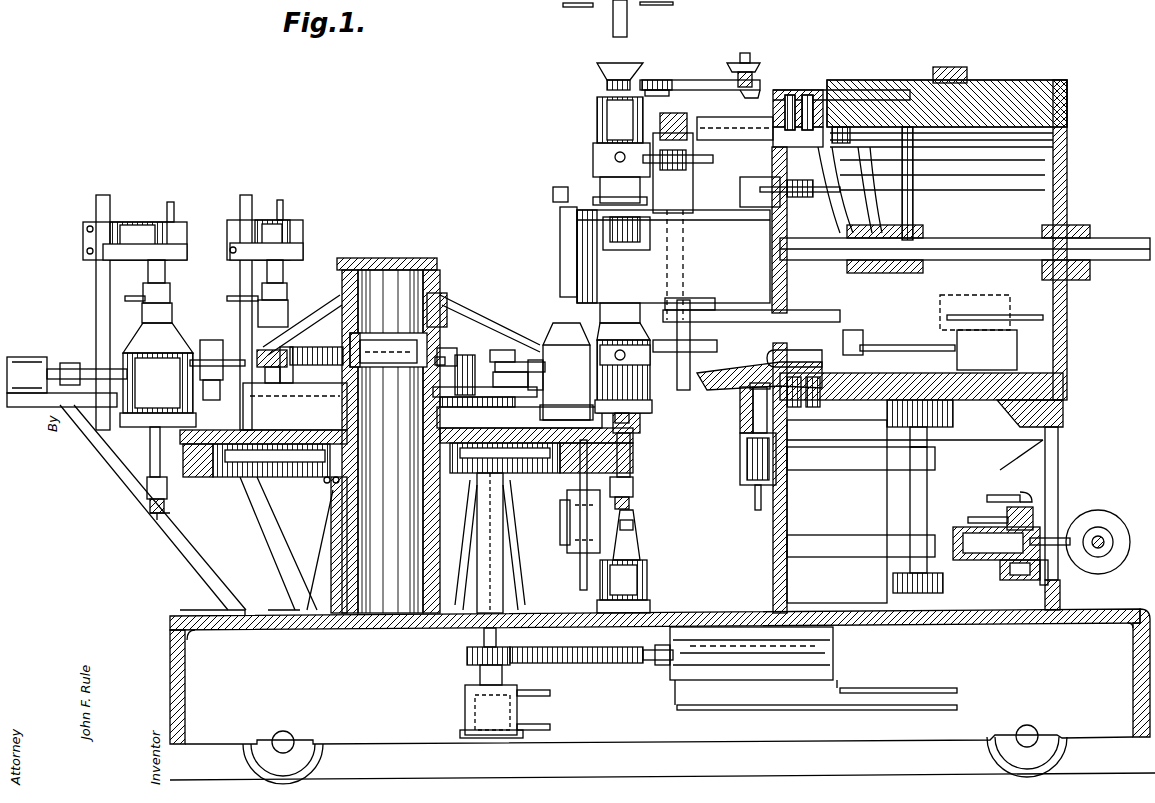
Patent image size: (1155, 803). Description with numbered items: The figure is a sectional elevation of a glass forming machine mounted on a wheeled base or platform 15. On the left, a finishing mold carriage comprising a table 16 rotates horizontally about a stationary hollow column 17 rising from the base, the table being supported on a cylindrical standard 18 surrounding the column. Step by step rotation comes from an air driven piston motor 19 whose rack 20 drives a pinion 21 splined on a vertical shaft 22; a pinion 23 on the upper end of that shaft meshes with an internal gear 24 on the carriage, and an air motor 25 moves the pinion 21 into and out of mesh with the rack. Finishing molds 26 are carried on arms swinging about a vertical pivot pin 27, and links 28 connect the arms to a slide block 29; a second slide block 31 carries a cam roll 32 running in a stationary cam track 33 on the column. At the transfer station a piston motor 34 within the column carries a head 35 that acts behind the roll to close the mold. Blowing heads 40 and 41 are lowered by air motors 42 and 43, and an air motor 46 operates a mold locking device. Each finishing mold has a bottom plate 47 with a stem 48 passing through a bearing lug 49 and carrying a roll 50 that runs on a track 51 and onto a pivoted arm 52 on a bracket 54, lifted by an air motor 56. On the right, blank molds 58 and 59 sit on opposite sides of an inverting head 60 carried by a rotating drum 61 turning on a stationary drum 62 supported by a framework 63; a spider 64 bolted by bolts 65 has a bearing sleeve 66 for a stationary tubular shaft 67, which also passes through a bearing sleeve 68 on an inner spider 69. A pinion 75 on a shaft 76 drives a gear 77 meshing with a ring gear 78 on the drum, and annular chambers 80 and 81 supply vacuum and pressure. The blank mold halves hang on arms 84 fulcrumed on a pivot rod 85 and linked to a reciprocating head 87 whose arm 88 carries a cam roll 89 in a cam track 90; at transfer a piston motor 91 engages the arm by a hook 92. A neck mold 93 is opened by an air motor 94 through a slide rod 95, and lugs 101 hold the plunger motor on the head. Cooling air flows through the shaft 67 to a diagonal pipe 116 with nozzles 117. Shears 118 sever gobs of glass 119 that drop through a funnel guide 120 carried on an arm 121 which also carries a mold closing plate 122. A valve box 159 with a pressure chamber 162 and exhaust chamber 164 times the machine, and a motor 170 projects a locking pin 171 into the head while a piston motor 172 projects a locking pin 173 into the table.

The wheeled base or platform 15 is at (710, 615).
The table 16 is at (310, 425).
The stationary hollow shaft or column 17 is at (325, 484).
The cylindrical standard 18 is at (323, 525).
The air driven piston motor 19 is at (775, 675).
The rack 20 is at (592, 665).
The pinion 21 is at (467, 660).
The vertical shaft 22 is at (484, 640).
The pinion 23 is at (500, 470).
The internal gear 24 is at (240, 480).
The air motor 25 is at (465, 708).
The finishing molds 26 is at (170, 338).
The vertical pivot pin 27 is at (215, 340).
The links 28 is at (530, 362).
The slide block 29 is at (505, 395).
The second slide block 31 is at (465, 400).
The cam roll 32 is at (280, 370).
The stationary cam groove or track 33 is at (265, 352).
The piston motor 34 is at (405, 372).
The head 35 is at (445, 345).
The blowing head 40 is at (285, 306).
The blowing head 41 is at (165, 292).
The air motor 42 is at (290, 225).
The air motor 43 is at (170, 225).
The air motor 46 is at (30, 357).
The bottom plate 47 is at (635, 420).
The vertical stem 48 is at (630, 462).
The bearing lug 49 is at (633, 433).
The roll 50 is at (168, 487).
The track 51 is at (165, 518).
The horizontally disposed arm or track 52 is at (630, 503).
The stationary bracket 54 is at (640, 552).
The air motor 56 is at (640, 583).
The blank mold 58 is at (600, 125).
The blank mold 59 is at (652, 402).
The blank mold inverting head 60 is at (673, 265).
The drum 61 is at (907, 80).
The stationary cylindrical shell or drum 62 is at (1013, 135).
The framework 63 is at (1058, 455).
The spider 64 is at (1065, 390).
The bolts 65 is at (1063, 415).
The central bearing sleeve 66 is at (1078, 280).
The stationary horizontal tubular shaft 67 is at (1000, 248).
The bearing sleeve 68 is at (890, 230).
The spider 69 is at (913, 192).
The pinion 75 is at (893, 585).
The shaft 76 is at (927, 500).
The gear 77 is at (935, 427).
The ring gear 78 is at (968, 75).
The annular chamber 80 is at (792, 93).
The annular chamber 81 is at (815, 93).
The arms 84 is at (595, 160).
The pivot rod 85 is at (688, 122).
The head 87 is at (715, 152).
The arm 88 is at (780, 180).
The cam roll 89 is at (845, 125).
The cam track 90 is at (868, 195).
The piston motor 91 is at (1017, 350).
The hook 92 is at (835, 340).
The neck mold 93 is at (600, 190).
The air motor 94 is at (985, 303).
The slide rod 95 is at (730, 310).
The lugs 101 is at (625, 250).
The diagonal pipe 116 is at (560, 220).
The nozzles 117 is at (565, 200).
The shears 118 is at (577, 7).
The gobs of glass 119 is at (628, 12).
The funnel guide 120 is at (600, 66).
The arm 121 is at (695, 82).
The mold closing plate 122 is at (655, 80).
The valve box 159 is at (975, 515).
The air pressure chamber 162 is at (998, 571).
The exhaust chamber 164 is at (1030, 585).
The motor 170 is at (740, 450).
The locking pin 171 is at (750, 398).
The piston motor 172 is at (565, 530).
The locking pin 173 is at (567, 495).